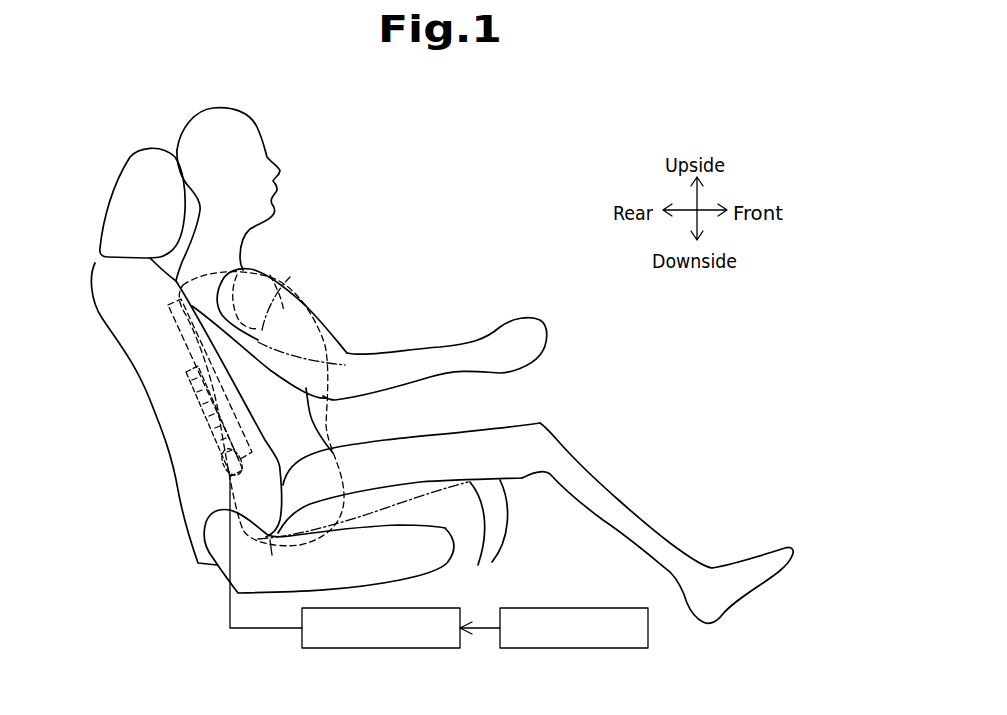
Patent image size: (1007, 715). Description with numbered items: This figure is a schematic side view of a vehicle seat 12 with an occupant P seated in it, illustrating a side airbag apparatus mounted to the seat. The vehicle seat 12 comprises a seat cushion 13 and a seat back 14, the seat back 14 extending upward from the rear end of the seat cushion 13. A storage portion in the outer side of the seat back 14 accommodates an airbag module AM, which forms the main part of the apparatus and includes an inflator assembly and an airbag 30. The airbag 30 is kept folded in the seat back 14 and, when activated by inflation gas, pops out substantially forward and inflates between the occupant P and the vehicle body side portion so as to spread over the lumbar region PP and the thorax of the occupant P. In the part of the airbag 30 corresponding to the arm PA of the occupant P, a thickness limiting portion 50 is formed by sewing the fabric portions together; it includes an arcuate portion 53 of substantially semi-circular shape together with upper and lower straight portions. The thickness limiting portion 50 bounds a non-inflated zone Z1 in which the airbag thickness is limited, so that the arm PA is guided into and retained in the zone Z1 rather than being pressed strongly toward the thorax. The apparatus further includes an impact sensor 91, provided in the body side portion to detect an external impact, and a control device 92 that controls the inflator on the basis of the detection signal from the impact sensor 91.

The occupant P is at (262, 128).
The arm PA is at (331, 328).
The vehicle seat 12 is at (124, 455).
The seat back 14 is at (154, 412).
The airbag 30 is at (333, 408).
The non-inflated zone Z1 is at (307, 337).
The thickness limiting portion 50 is at (325, 263).
The arcuate portion 53 is at (236, 274).
The airbag module AM is at (228, 396).
The lumbar region PP is at (275, 561).
The seat cushion 13 is at (504, 531).
The control device 92 is at (434, 607).
The impact sensor 91 is at (600, 607).